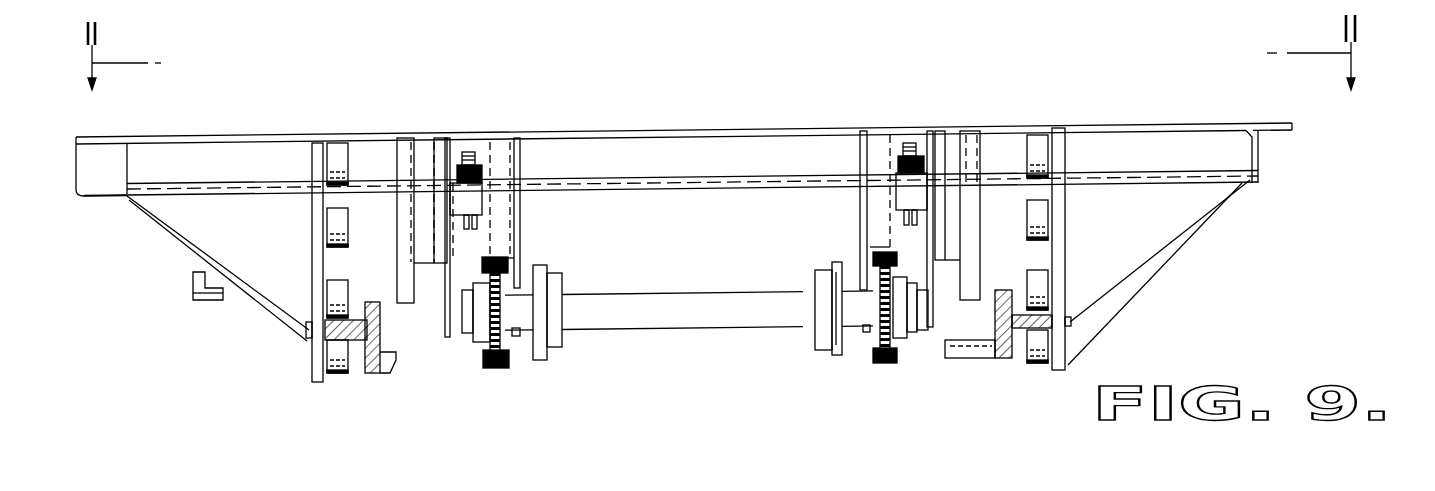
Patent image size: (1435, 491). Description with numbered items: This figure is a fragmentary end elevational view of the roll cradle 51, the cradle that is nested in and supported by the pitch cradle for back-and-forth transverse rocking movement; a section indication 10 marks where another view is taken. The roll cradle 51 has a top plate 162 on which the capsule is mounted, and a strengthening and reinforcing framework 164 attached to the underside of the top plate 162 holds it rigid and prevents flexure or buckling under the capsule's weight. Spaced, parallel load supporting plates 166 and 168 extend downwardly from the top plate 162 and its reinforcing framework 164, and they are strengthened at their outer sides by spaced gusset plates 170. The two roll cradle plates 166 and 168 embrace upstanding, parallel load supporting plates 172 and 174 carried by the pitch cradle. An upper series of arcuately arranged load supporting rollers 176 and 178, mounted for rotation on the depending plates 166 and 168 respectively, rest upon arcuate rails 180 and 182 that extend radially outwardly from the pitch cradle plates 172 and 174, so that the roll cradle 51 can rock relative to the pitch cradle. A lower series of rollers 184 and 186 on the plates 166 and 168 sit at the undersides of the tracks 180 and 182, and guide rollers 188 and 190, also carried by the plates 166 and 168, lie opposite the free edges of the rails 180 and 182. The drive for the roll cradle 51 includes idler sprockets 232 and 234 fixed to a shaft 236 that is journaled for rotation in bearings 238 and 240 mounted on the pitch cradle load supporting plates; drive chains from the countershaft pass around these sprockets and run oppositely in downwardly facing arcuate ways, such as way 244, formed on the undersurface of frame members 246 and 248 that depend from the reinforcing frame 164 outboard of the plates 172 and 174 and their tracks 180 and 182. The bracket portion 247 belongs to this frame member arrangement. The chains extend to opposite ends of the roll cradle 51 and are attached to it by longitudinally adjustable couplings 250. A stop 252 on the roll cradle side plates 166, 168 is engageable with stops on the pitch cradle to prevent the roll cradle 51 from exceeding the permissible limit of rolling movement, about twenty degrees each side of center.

The section line 10- 10 is at (748, 69).
The roll cradle 51 is at (1268, 204).
The top plate 162 is at (698, 128).
The reinforcing framework 164 is at (1262, 156).
The load supporting plate 166 is at (1060, 223).
The load supporting plate 168 is at (318, 222).
The gusset plate 170 is at (186, 218).
The load supporting plate 172 is at (1003, 344).
The load supporting plate 174 is at (368, 378).
The load supporting roller 176 is at (1034, 134).
The load supporting roller 178 is at (344, 153).
The arcuate rail 180 is at (1022, 313).
The arcuate rail 182 is at (357, 325).
The lower roller 184 is at (1068, 357).
The lower roller 186 is at (338, 378).
The guide roller 188 is at (1083, 322).
The guide roller 190 is at (308, 334).
The idler sprocket 232 is at (878, 337).
The idler sprocket 234 is at (490, 349).
The shaft 236 is at (684, 297).
The bearing 238 is at (825, 346).
The bearing 240 is at (562, 350).
The arcuate way 244 is at (507, 208).
The frame member 246 is at (860, 232).
The bracket web 247 is at (875, 204).
The frame member 248 is at (524, 242).
The longitudinally adjustable coupling 250 is at (480, 188).
The stop 252 is at (404, 304).